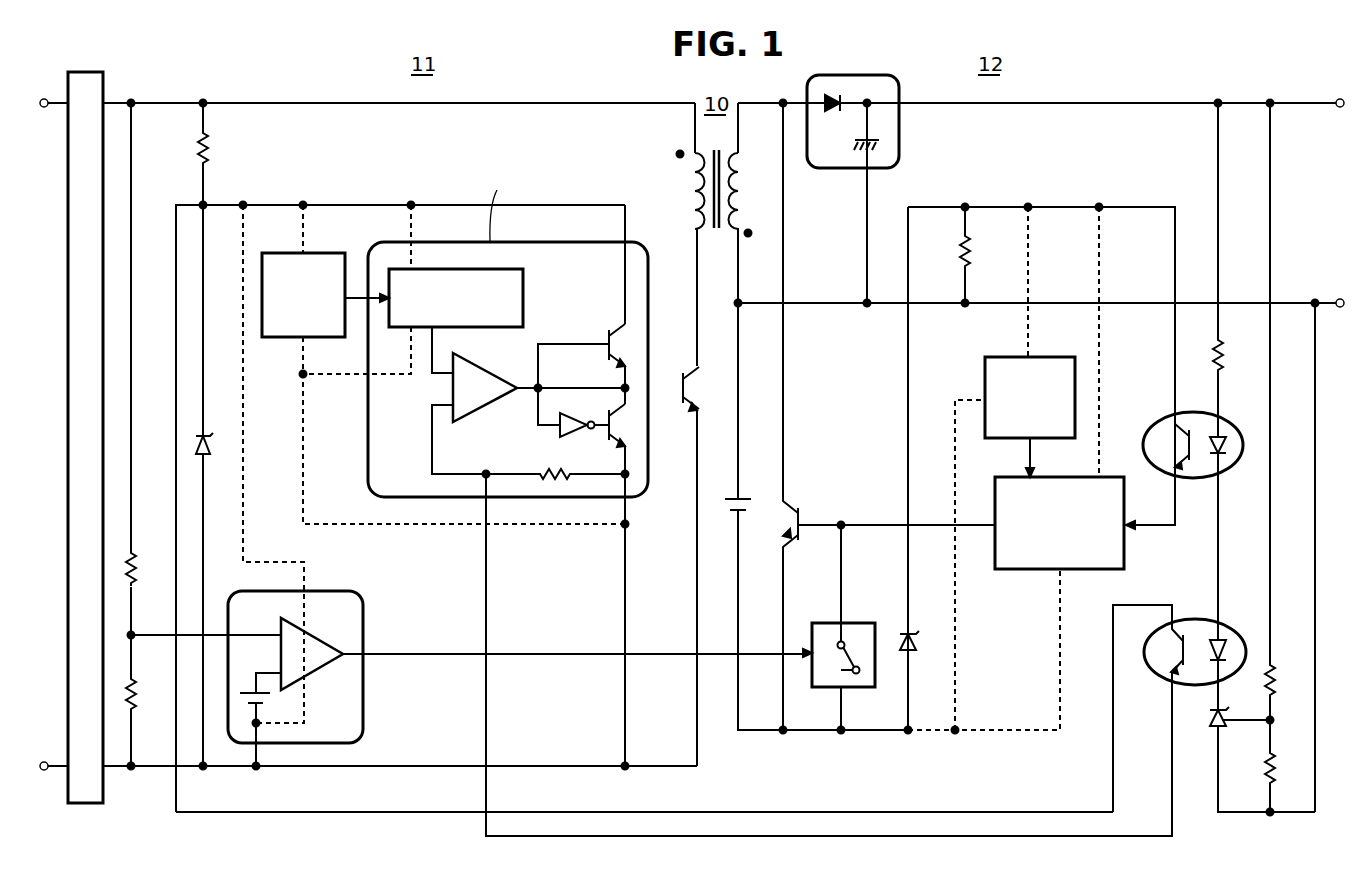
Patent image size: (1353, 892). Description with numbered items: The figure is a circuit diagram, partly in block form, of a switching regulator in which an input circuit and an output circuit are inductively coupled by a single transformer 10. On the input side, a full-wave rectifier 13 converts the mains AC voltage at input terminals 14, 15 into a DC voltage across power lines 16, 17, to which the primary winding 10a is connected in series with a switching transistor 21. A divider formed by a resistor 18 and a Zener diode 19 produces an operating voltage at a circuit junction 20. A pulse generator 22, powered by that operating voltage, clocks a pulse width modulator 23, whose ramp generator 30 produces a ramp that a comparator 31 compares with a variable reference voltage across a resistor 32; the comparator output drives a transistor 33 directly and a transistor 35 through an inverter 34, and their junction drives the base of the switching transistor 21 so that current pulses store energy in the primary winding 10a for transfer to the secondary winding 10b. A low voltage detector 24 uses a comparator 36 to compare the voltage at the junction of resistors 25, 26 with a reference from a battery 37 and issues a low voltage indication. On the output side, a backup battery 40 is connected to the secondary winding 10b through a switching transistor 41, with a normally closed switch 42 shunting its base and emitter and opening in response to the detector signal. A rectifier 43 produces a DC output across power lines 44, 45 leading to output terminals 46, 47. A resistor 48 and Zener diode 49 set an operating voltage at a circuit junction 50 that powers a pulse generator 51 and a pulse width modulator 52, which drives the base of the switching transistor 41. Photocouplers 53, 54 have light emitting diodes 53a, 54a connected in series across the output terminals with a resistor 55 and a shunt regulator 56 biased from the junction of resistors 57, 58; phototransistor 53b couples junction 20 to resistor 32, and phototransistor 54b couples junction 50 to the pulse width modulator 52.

The transformer 10 is at (718, 203).
The primary winding 10a is at (692, 210).
The secondary winding 10b is at (744, 210).
The full-wave rectifier 13 is at (82, 72).
The input terminal 14 is at (44, 99).
The input terminal 15 is at (44, 762).
The power line 16 is at (330, 102).
The power line 17 is at (431, 766).
The resistor 18 is at (206, 147).
The Zener diode 19 is at (208, 445).
The circuit junction 20 is at (202, 205).
The switching transistor 21 is at (681, 374).
The pulse generator 22 is at (330, 253).
The pulse width modulator 23 is at (640, 255).
The low voltage detector 24 is at (363, 704).
The resistor 25 is at (133, 568).
The resistor 26 is at (133, 694).
The ramp generator 30 is at (523, 302).
The comparator 31 is at (466, 366).
The resistor 32 is at (561, 468).
The transistor 33 is at (604, 336).
The inverter 34 is at (549, 431).
The transistor 35 is at (604, 415).
The comparator 36 is at (312, 640).
The battery 37 is at (247, 706).
The battery 40 is at (746, 504).
The switching transistor 41 is at (803, 510).
The normally closed switch 42 is at (858, 623).
The rectifier 43 is at (844, 75).
The power line 44 is at (1144, 98).
The power line 45 is at (1136, 298).
The output terminal 46 is at (1339, 99).
The output terminal 47 is at (1339, 299).
The resistor 48 is at (962, 257).
The Zener diode 49 is at (912, 630).
The circuit junction 50 is at (965, 205).
The pulse generator 51 is at (1058, 357).
The pulse width modulator 52 is at (1042, 477).
The photocoupler 53 is at (874, 655).
The light emitting diode 53a is at (1228, 636).
The phototransistor 53b is at (1170, 669).
The photocoupler 54 is at (1200, 509).
The light emitting diode 54a is at (1221, 456).
The phototransistor 54b is at (1170, 422).
The resistor 55 is at (1220, 357).
The shunt regulator 56 is at (1208, 730).
The resistor 57 is at (1272, 680).
The resistor 58 is at (1272, 769).